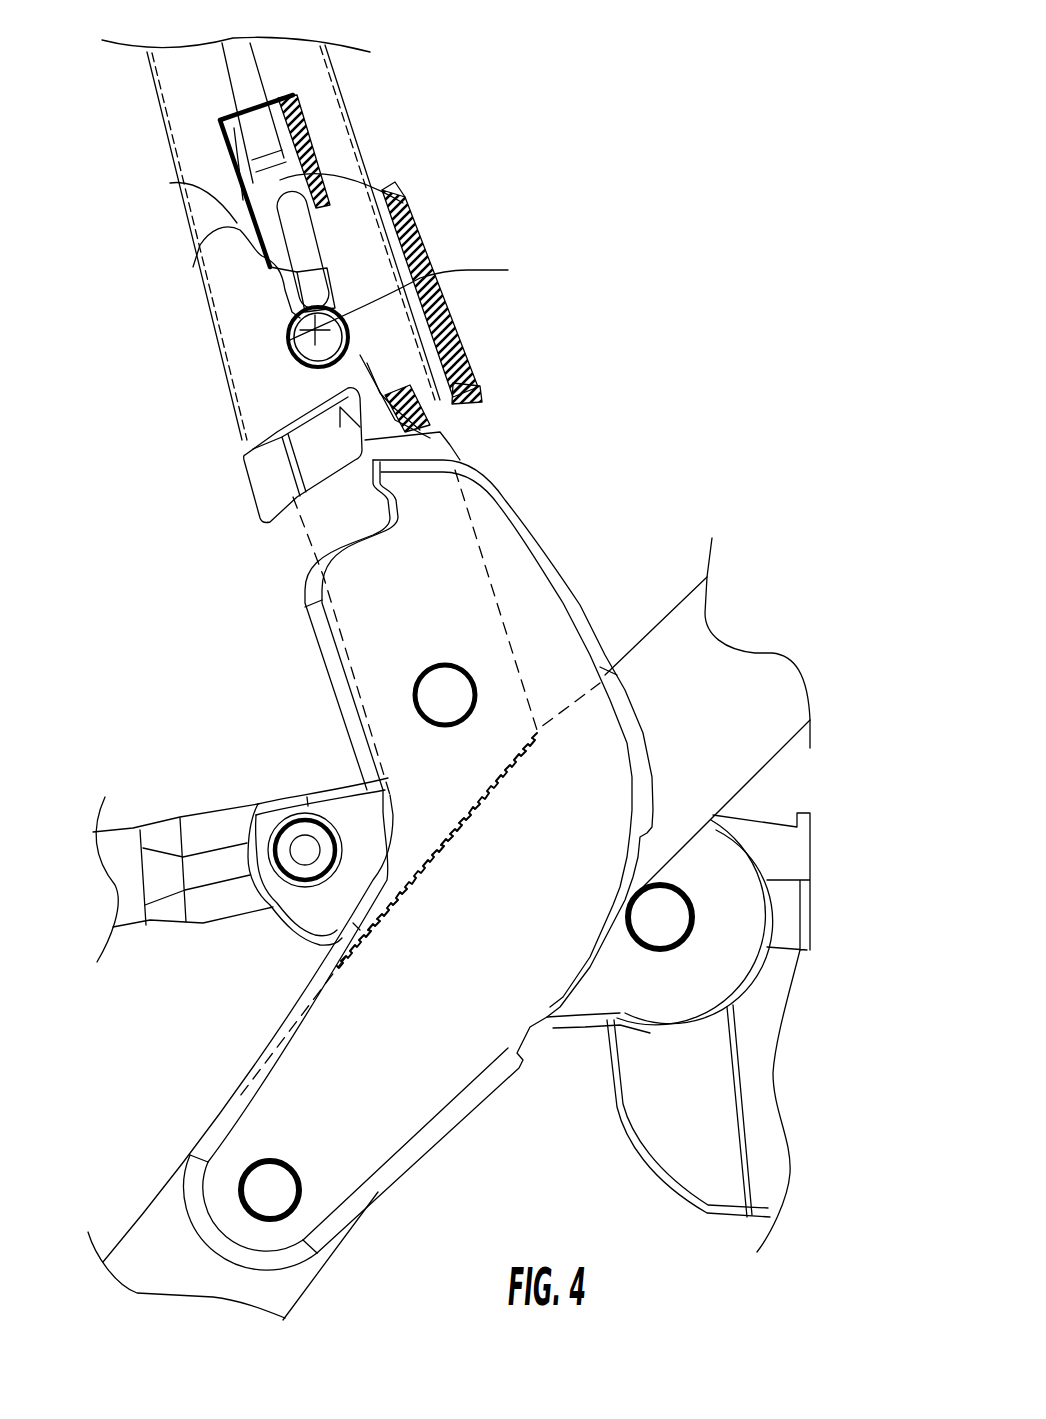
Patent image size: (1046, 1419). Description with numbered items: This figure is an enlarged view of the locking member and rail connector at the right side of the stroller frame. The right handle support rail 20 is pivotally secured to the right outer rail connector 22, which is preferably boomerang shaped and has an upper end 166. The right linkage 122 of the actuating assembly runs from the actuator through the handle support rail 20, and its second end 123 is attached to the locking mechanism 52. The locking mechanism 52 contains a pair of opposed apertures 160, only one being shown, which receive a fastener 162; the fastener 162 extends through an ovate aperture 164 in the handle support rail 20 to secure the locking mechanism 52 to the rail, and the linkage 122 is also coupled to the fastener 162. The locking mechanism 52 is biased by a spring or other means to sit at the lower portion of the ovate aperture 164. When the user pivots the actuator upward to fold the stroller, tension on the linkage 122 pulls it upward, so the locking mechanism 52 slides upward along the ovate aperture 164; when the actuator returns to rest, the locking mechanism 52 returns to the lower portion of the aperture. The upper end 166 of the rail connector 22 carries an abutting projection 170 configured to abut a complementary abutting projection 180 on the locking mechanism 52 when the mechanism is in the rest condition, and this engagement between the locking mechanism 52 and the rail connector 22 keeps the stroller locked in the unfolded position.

The right handle support rail 20 is at (187, 100).
The right linkage 122 is at (256, 90).
The second end 123 is at (413, 267).
The locking mechanism 52 is at (414, 299).
The ovate aperture 164 is at (283, 220).
The fastener 162 is at (290, 340).
The opposed apertures 160 is at (290, 375).
The abutting projection 170 is at (293, 500).
The abutting projection 180 is at (433, 440).
The right outer rail connector 22 is at (480, 492).
The upper end 166 is at (447, 545).